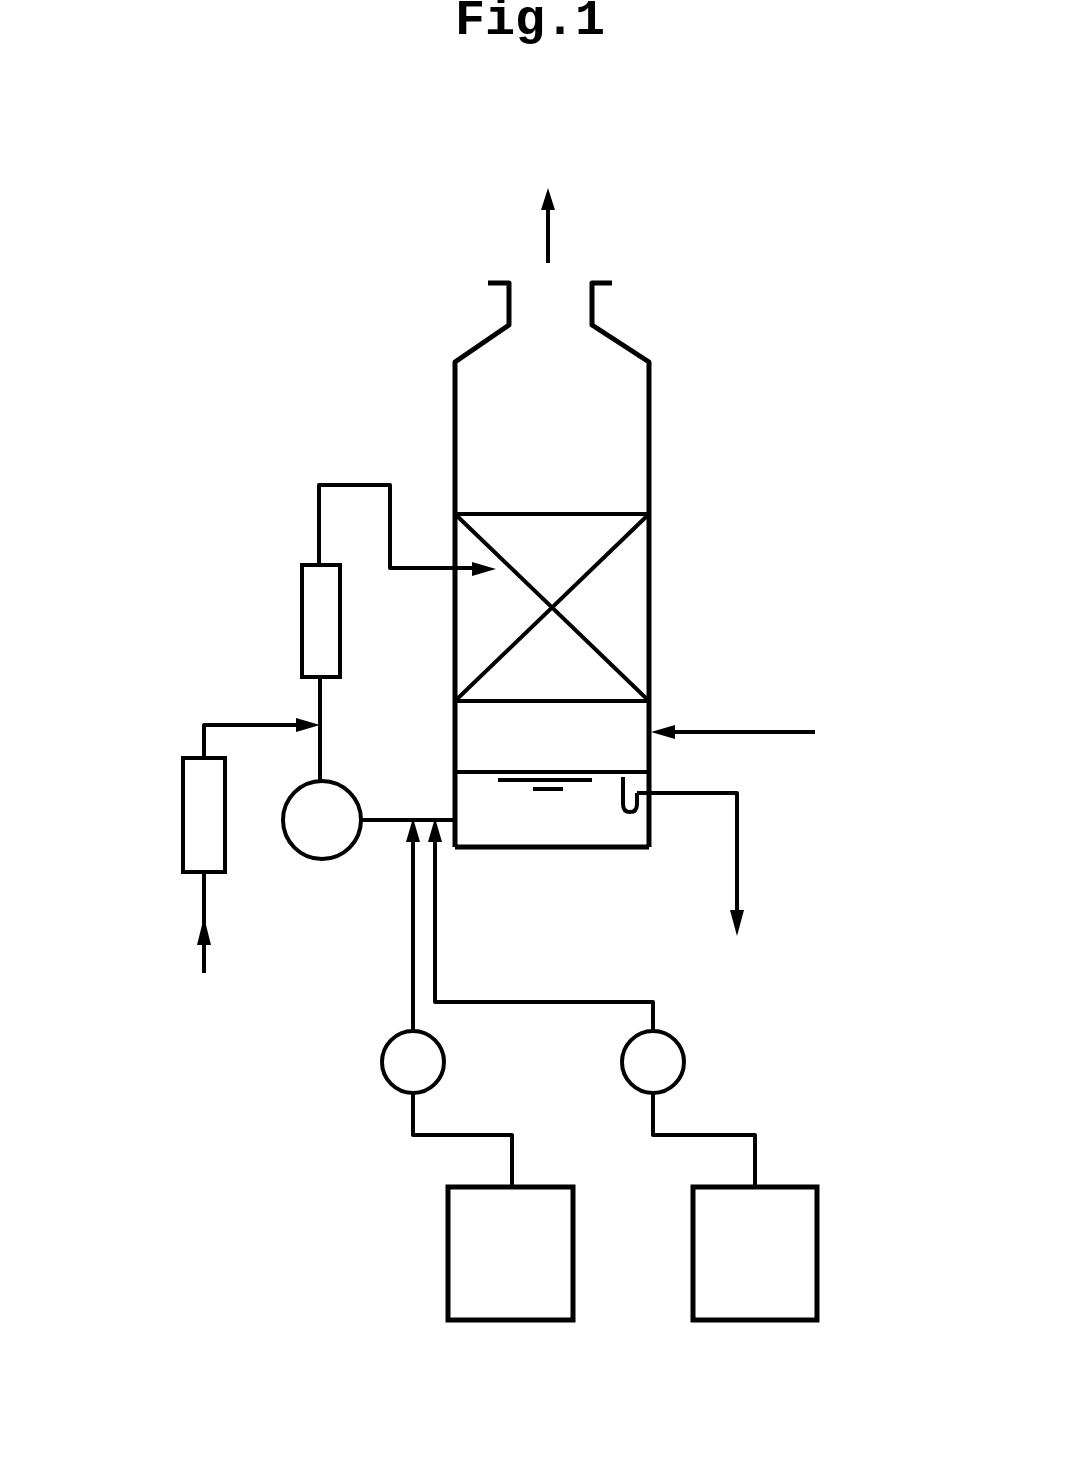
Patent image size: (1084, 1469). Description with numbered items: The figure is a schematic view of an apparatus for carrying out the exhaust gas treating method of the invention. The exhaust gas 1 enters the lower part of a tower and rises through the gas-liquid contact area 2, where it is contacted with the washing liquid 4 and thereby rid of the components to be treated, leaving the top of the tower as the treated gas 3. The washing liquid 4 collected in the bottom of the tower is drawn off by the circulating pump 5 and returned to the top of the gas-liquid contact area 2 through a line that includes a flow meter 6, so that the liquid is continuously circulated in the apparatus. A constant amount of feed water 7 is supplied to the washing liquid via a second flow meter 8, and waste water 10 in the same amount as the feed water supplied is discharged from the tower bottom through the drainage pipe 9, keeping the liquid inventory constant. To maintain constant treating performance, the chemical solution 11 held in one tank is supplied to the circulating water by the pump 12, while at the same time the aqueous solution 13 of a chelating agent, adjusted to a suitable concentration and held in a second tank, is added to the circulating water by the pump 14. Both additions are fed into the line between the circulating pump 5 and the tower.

The exhaust gas 1 is at (770, 731).
The gas-liquid contact area 2 is at (641, 590).
The treated gas 3 is at (550, 230).
The washing liquid 4 is at (620, 833).
The circulating pump 5 is at (323, 860).
The flow meter 6 is at (341, 645).
The feed water 7 is at (206, 955).
The flow meter 8 is at (182, 808).
The drainage pipe 9 is at (630, 797).
The waste water 10 is at (739, 860).
The chemical solution 11 is at (574, 1255).
The pump 12 is at (445, 1065).
The aqueous solution of a chelating agent 13 is at (818, 1245).
The pump 14 is at (685, 1065).